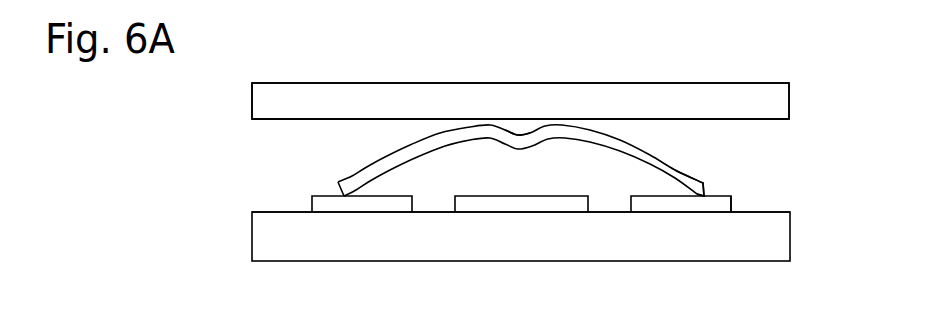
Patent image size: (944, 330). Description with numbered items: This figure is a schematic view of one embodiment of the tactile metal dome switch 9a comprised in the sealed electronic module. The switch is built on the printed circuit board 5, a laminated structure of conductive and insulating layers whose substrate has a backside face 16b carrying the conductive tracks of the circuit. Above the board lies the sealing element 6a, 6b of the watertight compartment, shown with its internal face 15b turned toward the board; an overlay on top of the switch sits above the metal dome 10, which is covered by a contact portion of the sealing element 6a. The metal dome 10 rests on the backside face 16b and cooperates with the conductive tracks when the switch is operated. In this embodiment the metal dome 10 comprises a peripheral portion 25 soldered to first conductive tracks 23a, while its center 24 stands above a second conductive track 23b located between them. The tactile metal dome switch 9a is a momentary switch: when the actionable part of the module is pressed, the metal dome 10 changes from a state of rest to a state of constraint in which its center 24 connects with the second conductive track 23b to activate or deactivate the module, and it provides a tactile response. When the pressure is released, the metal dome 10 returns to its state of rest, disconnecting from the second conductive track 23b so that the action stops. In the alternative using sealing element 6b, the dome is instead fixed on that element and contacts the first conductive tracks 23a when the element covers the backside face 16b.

The sealing element 6a is at (728, 95).
The sealing element 6b is at (520, 101).
The internal face 15b is at (284, 119).
The printed circuit board 5 is at (685, 232).
The backside face 16b is at (758, 212).
The first conductive tracks 23a is at (343, 203).
The second conductive track 23b is at (505, 203).
The metal dome 10 is at (357, 180).
The center 24 is at (520, 133).
The peripheral portion 25 is at (693, 180).
The tactile metal dome switch 9a is at (728, 176).